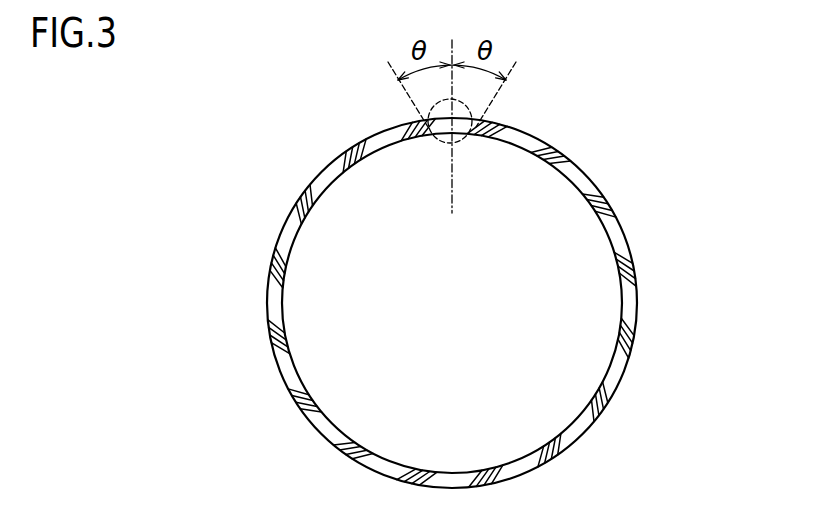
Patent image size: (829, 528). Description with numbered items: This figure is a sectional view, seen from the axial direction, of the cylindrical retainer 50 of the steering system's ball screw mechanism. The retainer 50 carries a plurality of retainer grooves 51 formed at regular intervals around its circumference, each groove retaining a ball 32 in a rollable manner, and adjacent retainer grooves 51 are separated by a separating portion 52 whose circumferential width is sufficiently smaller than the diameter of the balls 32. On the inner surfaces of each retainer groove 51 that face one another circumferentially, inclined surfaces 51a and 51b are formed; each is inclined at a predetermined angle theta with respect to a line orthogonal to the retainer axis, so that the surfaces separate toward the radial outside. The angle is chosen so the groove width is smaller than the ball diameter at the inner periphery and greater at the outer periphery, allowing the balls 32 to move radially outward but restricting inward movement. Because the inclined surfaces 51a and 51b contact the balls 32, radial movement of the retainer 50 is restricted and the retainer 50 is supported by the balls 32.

The retainer 50 is at (478, 274).
The retainer groove 51 is at (452, 288).
The inclined surface 51a is at (418, 124).
The inclined surface 51b is at (480, 124).
The separating portion 52 is at (598, 203).
The ball 32 is at (463, 145).